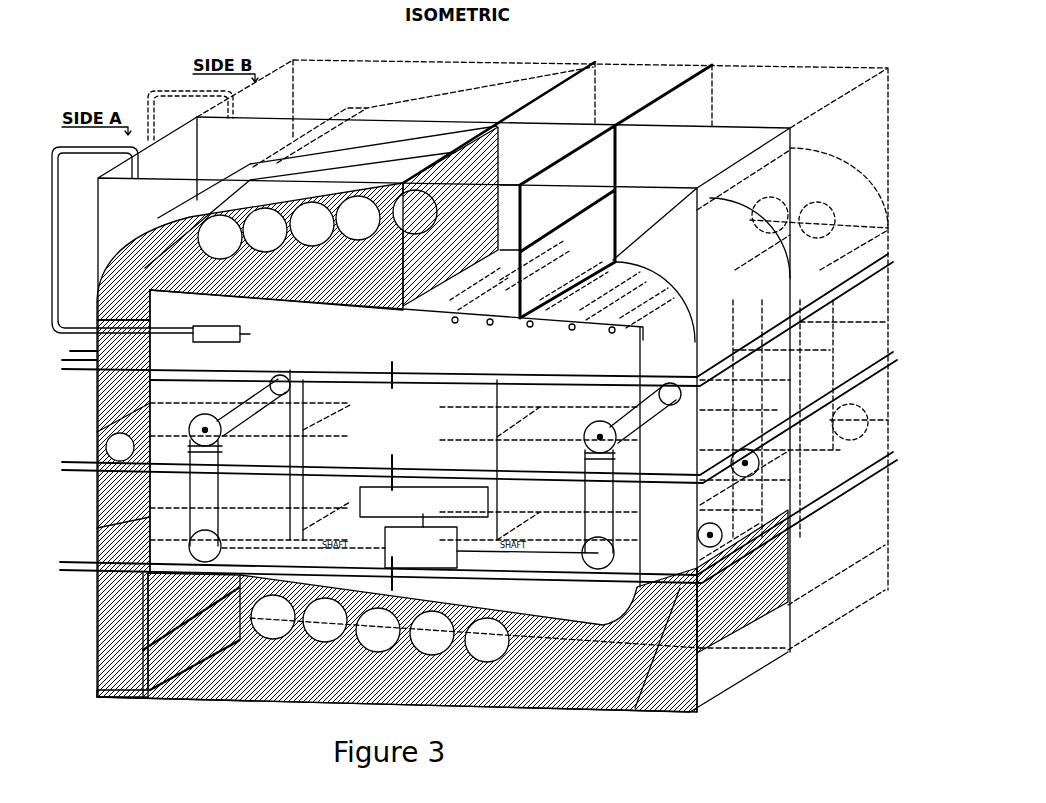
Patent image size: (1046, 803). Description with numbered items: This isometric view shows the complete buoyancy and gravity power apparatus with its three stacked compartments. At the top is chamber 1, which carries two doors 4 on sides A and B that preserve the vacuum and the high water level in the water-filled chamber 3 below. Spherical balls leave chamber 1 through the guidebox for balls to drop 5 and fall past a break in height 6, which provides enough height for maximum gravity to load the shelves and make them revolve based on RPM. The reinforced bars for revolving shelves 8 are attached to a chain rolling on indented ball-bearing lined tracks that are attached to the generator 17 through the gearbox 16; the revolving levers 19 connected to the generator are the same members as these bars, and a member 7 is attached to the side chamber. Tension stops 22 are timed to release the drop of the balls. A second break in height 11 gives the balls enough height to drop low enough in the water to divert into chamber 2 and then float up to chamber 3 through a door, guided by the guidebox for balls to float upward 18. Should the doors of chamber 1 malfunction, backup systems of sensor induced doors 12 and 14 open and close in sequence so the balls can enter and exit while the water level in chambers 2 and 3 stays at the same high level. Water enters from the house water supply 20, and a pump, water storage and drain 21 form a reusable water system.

The chamber 1 is at (492, 386).
The chamber 2 is at (442, 519).
The chamber 3 is at (345, 193).
The doors 4 is at (540, 109).
The guidebox for balls to drop 5 is at (751, 257).
The break in height 6 is at (728, 365).
The side chamber attachment 7 is at (580, 455).
The reinforced bars for revolving shelves 8 is at (597, 462).
The break in height 11 is at (652, 570).
The sensor induced doors 12 is at (637, 707).
The sensor induced doors 14 is at (163, 688).
The gearbox 16 is at (421, 541).
The generator 17 is at (424, 502).
The guidebox for balls to float upward 18 is at (96, 406).
The revolving levers 19 is at (222, 448).
The water supply 20 is at (466, 422).
The pump and water storage and drain 21 is at (250, 337).
The tension stops 22 is at (455, 320).